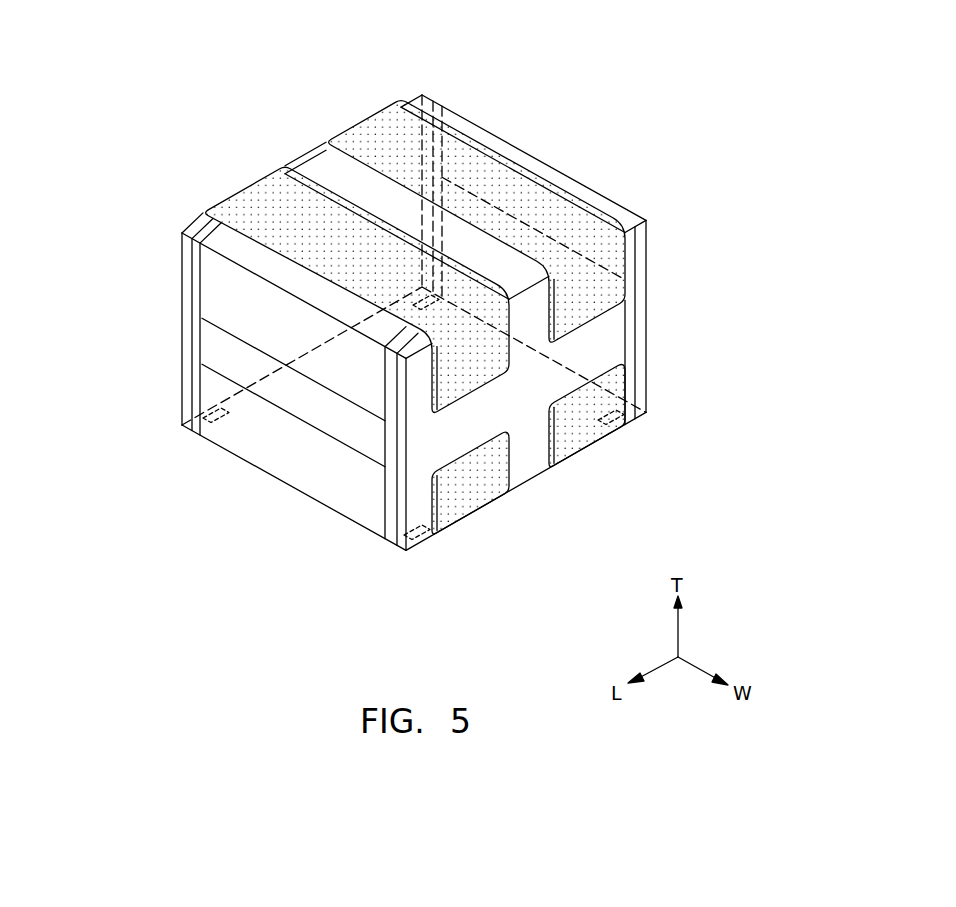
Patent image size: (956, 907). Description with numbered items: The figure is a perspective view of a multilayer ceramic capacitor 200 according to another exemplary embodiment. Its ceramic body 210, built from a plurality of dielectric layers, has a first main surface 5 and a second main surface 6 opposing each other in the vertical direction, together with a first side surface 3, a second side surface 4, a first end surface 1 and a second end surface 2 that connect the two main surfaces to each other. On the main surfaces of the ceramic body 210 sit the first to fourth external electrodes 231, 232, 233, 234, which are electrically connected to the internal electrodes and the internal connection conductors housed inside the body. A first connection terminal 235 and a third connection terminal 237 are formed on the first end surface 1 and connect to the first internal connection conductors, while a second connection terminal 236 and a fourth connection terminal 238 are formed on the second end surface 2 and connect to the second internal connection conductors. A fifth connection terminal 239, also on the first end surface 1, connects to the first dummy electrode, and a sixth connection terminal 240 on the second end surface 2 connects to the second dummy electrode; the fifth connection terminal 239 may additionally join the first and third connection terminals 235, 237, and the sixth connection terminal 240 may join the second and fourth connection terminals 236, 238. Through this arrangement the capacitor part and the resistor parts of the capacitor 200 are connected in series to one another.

The multilayer ceramic capacitor 200 is at (427, 286).
The ceramic body 210 is at (431, 317).
The first end surface 1 is at (292, 472).
The second end surface 2 is at (590, 190).
The first side surface 3 is at (607, 350).
The second side surface 4 is at (184, 222).
The first main surface 5 is at (538, 479).
The second main surface 6 is at (529, 165).
The first external electrode 231 is at (478, 508).
The second external electrode 232 is at (594, 443).
The third external electrode 233 is at (254, 197).
The fourth external electrode 234 is at (370, 127).
The first connection terminal 235 is at (389, 472).
The second connection terminal 236 is at (612, 215).
The third connection terminal 237 is at (205, 330).
The fourth connection terminal 238 is at (434, 96).
The fifth connection terminal 239 is at (220, 363).
The sixth connection terminal 240 is at (650, 258).